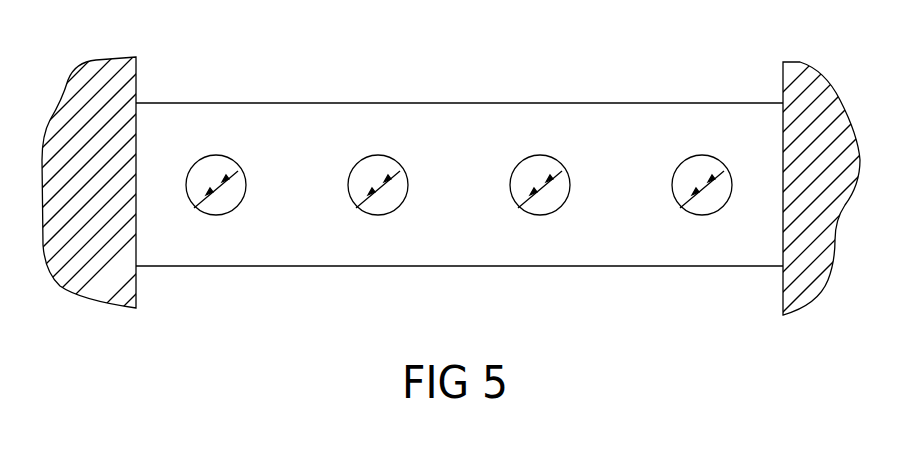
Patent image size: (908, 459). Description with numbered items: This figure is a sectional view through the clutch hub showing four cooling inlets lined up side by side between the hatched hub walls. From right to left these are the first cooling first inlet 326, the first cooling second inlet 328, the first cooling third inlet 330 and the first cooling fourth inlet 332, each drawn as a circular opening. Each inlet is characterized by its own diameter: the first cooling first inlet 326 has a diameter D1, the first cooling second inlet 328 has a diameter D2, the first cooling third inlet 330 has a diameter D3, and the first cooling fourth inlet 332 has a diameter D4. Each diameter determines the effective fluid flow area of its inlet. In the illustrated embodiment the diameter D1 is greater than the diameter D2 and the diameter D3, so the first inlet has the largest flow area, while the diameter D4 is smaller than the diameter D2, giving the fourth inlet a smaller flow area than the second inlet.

The first cooling first inlet 326 is at (686, 158).
The first cooling second inlet 328 is at (520, 164).
The first cooling third inlet 330 is at (386, 160).
The first cooling fourth inlet 332 is at (190, 166).
The diameter of the first cooling first inlet D1 is at (702, 185).
The diameter of the first cooling second inlet D2 is at (540, 185).
The diameter of the first cooling third inlet D3 is at (378, 185).
The diameter of the first cooling fourth inlet D4 is at (216, 185).